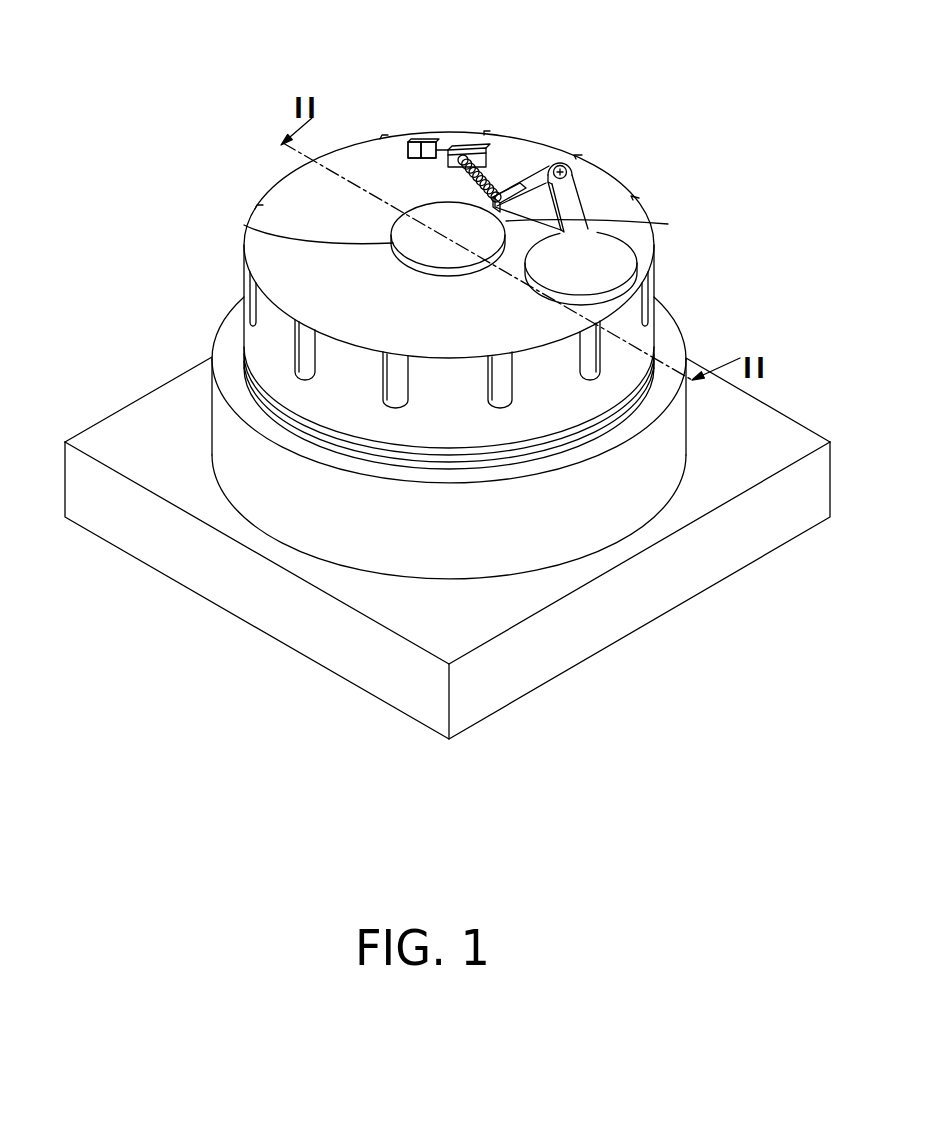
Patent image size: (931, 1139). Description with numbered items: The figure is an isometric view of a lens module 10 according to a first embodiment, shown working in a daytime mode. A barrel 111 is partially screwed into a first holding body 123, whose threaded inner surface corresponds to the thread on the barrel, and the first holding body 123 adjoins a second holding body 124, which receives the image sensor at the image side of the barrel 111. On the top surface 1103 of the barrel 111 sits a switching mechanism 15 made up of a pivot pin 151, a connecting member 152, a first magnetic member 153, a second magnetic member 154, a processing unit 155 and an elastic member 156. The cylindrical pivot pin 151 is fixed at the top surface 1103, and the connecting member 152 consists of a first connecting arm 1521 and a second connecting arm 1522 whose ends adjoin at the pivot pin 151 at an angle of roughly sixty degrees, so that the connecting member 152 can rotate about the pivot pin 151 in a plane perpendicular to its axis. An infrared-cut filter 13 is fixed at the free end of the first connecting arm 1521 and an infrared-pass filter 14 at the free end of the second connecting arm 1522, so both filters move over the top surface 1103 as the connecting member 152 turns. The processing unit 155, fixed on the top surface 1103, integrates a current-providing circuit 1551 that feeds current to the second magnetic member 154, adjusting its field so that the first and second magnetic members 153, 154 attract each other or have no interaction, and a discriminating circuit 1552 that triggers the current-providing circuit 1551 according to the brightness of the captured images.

The lens module 10 is at (264, 62).
The top surface 1103 is at (296, 203).
The barrel 111 is at (282, 345).
The first holding body 123 is at (293, 505).
The second holding body 124 is at (150, 418).
The infrared-cut filter 13 is at (410, 243).
The infrared-pass filter 14 is at (620, 260).
The switching mechanism 15 is at (792, 135).
The pivot pin 151 is at (566, 165).
The connecting member 152 is at (735, 162).
The first connecting arm 1521 is at (595, 228).
The second connecting arm 1522 is at (570, 203).
The first magnetic member 153 is at (519, 180).
The second magnetic member 154 is at (463, 143).
The processing unit 155 is at (402, 63).
The current-providing circuit 1551 is at (427, 133).
The discriminating circuit 1552 is at (408, 133).
The elastic member 156 is at (485, 182).